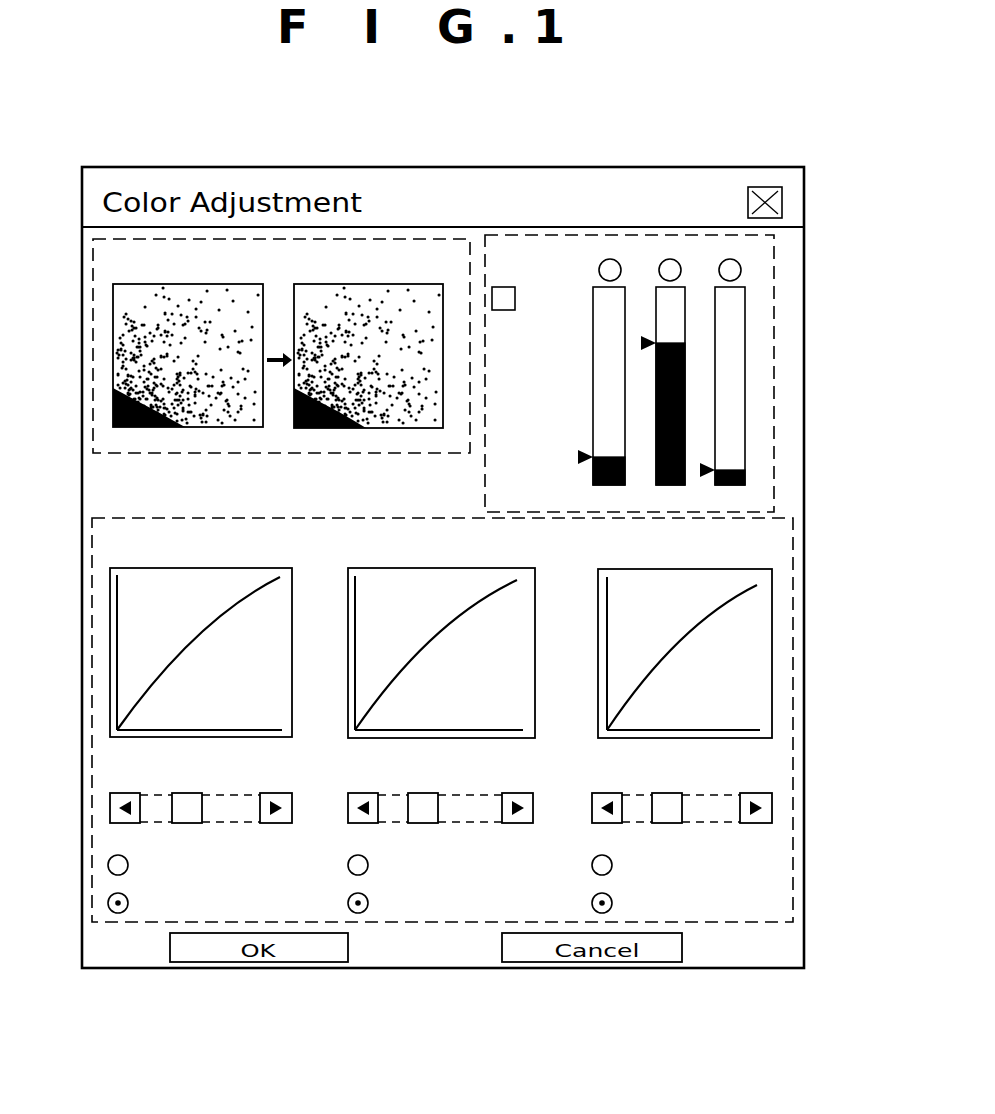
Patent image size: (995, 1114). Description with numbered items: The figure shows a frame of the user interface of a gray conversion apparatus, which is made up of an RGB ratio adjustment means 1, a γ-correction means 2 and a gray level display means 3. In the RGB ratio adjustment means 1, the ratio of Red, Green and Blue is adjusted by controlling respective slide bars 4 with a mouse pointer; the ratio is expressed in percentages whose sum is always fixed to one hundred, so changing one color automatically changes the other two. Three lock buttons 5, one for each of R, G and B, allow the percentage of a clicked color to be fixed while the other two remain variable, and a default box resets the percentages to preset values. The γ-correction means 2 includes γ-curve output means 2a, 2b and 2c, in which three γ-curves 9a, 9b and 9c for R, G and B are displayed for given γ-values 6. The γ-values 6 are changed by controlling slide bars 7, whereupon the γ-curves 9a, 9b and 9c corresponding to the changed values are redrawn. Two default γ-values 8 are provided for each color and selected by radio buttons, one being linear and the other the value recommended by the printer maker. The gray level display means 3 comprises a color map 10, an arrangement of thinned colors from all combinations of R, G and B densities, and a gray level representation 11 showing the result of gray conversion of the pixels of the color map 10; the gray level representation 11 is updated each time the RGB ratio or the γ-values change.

The RGB ratio adjustment means 1 is at (777, 254).
The γ-correction means 2 is at (795, 528).
The γ-curve output means 2a is at (164, 638).
The γ-curve output means 2b is at (441, 639).
The γ-curve output means 2c is at (727, 639).
The gray level display means 3 is at (93, 250).
The slide bars 4 is at (752, 343).
The lock buttons 5 is at (752, 273).
The γ-values 6 is at (752, 770).
The slide bars 7 is at (778, 812).
The default γ-values 8 is at (786, 901).
The γ-curve 9a is at (255, 588).
The γ-curve 9b is at (457, 612).
The γ-curve 9c is at (710, 610).
The color map 10 is at (128, 282).
The gray level representation 11 is at (352, 430).